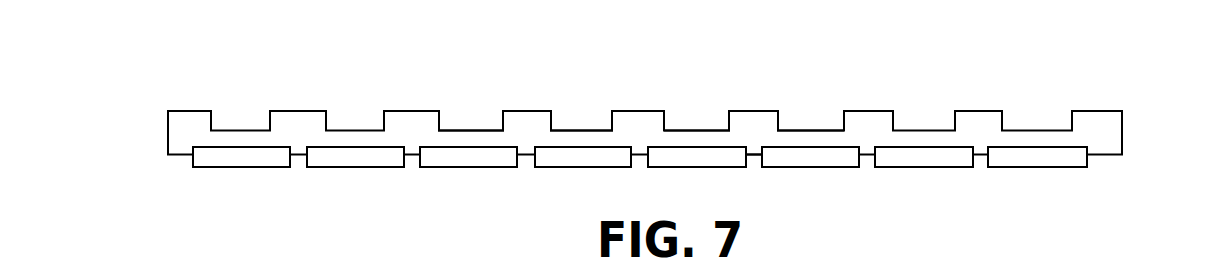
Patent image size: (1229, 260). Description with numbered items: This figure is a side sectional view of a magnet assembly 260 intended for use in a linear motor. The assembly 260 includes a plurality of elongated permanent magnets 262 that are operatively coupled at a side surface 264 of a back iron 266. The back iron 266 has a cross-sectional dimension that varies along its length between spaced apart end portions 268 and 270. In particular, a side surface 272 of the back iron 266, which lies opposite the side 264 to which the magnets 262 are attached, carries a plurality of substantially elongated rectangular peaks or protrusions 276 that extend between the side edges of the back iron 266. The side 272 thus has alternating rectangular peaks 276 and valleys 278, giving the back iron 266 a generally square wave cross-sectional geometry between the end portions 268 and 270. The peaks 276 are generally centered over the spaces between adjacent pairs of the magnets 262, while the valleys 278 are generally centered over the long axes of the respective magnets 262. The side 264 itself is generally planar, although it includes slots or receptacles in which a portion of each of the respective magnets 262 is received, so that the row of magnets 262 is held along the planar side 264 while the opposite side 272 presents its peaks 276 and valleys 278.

The magnet assembly 260 is at (676, 129).
The elongated permanent magnets 262 is at (245, 167).
The side surface of back iron 264 is at (752, 155).
The back iron 266 is at (1108, 103).
The end portion 268 is at (167, 135).
The end portion 270 is at (1123, 127).
The side surface of back iron 272 is at (698, 130).
The rectangular peaks 276 is at (410, 110).
The valleys 278 is at (595, 130).